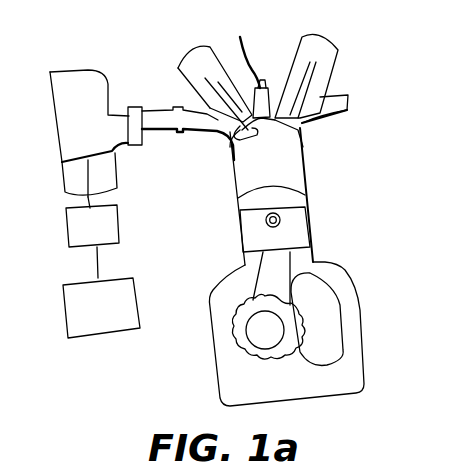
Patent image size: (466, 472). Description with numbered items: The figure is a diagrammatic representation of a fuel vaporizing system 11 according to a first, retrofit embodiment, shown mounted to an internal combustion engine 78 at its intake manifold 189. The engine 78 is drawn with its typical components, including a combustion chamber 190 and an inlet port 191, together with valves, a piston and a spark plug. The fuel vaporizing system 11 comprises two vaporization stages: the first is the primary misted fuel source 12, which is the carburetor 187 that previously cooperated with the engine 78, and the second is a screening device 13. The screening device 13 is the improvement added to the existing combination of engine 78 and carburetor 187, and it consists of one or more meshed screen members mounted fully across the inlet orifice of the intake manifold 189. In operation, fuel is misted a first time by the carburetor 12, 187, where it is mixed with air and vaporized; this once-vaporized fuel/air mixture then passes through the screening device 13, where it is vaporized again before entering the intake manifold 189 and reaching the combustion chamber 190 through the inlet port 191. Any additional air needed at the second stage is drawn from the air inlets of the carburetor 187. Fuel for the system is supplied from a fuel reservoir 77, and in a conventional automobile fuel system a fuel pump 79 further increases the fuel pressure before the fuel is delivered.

The primary misted fuel source 12 is at (88, 71).
The carburetor 187 is at (103, 101).
The intake manifold 189 is at (155, 108).
The screening device 13 is at (142, 150).
The fuel vaporizing system 11 is at (178, 178).
The combustion chamber 190 is at (273, 163).
The internal combustion engine 78 is at (320, 253).
The inlet port 191 is at (208, 115).
The fuel pump 79 is at (119, 215).
The fuel reservoir 77 is at (136, 292).